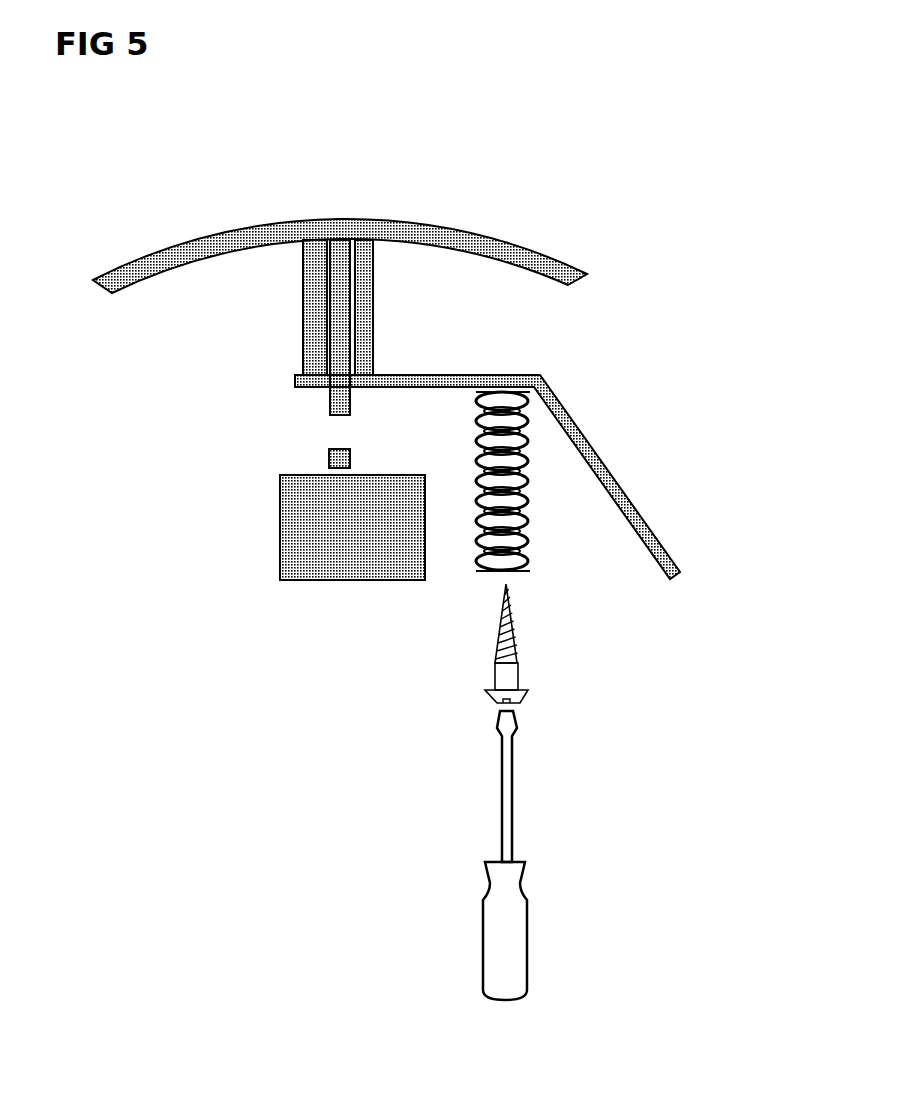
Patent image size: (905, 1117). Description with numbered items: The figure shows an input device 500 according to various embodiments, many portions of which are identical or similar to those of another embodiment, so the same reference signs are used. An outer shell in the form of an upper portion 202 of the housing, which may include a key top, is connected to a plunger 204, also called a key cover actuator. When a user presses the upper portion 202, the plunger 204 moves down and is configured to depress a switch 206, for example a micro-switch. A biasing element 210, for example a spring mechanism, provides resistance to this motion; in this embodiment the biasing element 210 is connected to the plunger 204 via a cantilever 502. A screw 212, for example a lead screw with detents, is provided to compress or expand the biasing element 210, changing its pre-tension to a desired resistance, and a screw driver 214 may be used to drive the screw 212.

The input device 500 is at (713, 102).
The upper portion of the housing 202 is at (430, 223).
The plunger 204 is at (303, 298).
The switch 206 is at (280, 553).
The biasing element 210 is at (530, 527).
The screw 212 is at (495, 673).
The screw driver 214 is at (490, 963).
The cantilever 502 is at (632, 500).